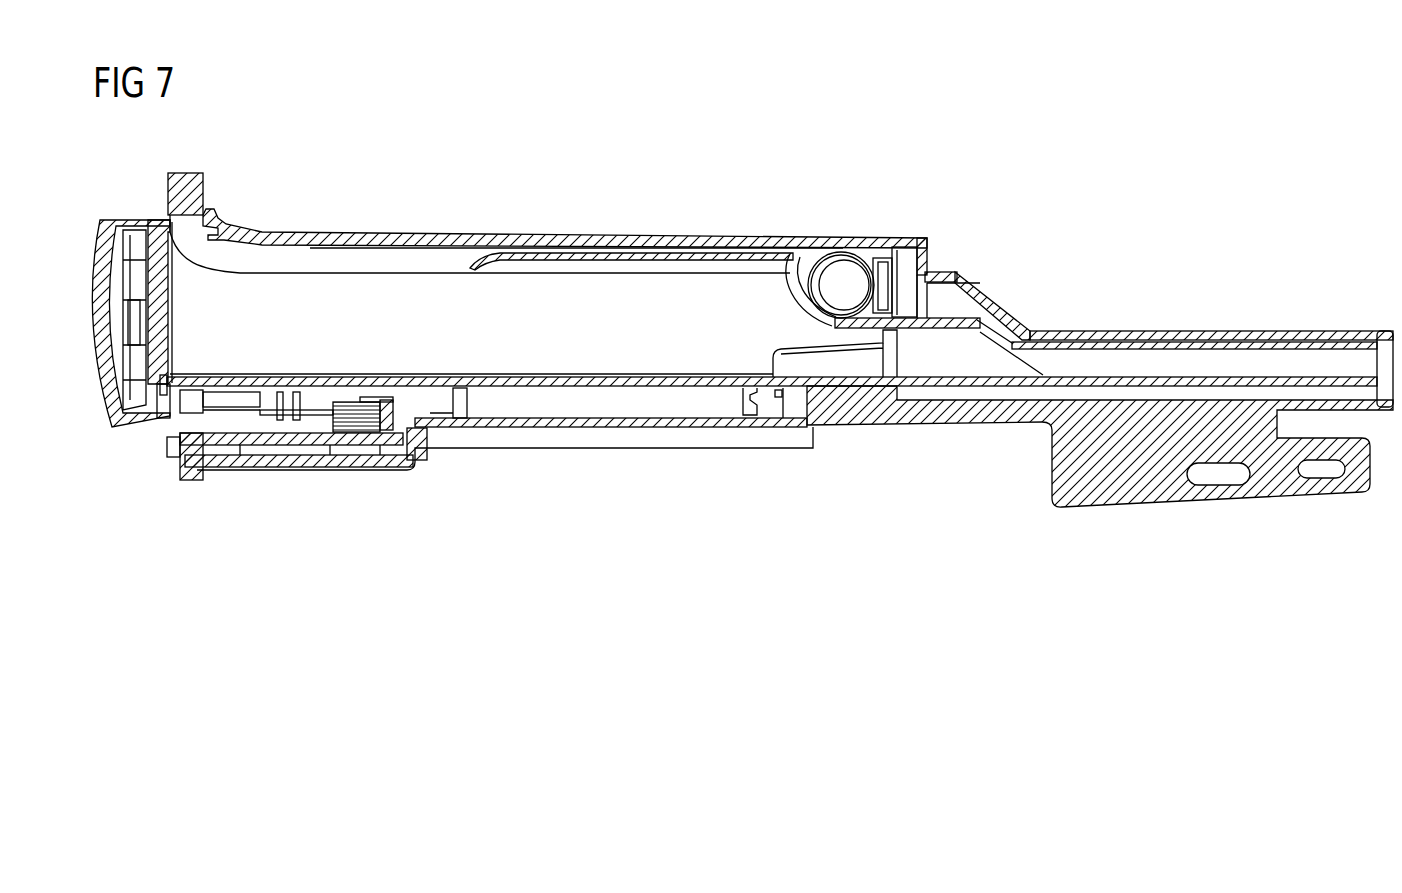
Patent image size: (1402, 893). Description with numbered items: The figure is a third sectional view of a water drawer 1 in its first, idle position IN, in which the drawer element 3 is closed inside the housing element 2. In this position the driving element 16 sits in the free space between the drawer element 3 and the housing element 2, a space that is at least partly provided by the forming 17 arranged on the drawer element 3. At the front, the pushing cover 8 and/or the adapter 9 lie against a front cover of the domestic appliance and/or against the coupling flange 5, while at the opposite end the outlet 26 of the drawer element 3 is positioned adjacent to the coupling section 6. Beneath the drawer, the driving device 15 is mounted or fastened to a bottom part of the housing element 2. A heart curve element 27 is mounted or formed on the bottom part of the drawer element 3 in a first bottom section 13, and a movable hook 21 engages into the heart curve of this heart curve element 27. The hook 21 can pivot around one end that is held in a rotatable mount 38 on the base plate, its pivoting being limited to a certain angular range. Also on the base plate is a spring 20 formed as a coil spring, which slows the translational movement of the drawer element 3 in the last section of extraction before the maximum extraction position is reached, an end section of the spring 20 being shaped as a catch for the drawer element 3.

The water drawer 1 is at (699, 179).
The first (idle) position IN is at (312, 174).
The housing element 2 is at (858, 242).
The drawer element 3 is at (647, 386).
The coupling flange 5 is at (188, 184).
The coupling section 6 is at (1381, 330).
The pushing cover 8 is at (100, 295).
The adapter 9 is at (150, 223).
The first bottom section 13 is at (390, 385).
The driving device 15 is at (361, 443).
The driving element 16 is at (874, 278).
The forming 17 is at (800, 290).
The spring 20 is at (364, 433).
The movable hook 21 is at (287, 427).
The outlet 26 is at (1358, 343).
The heart curve element 27 is at (237, 403).
The rotatable mount 38 is at (322, 430).